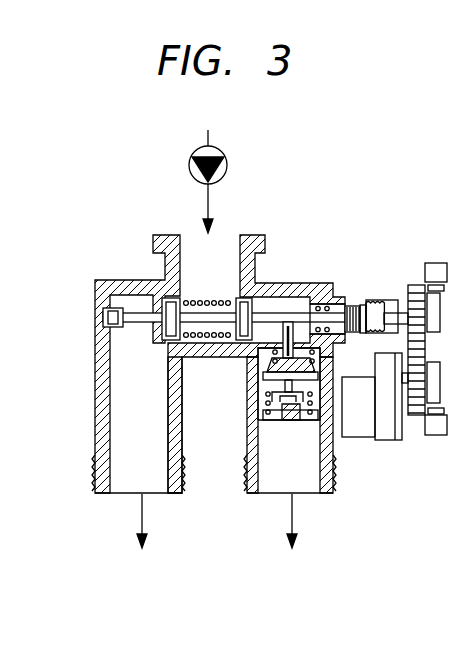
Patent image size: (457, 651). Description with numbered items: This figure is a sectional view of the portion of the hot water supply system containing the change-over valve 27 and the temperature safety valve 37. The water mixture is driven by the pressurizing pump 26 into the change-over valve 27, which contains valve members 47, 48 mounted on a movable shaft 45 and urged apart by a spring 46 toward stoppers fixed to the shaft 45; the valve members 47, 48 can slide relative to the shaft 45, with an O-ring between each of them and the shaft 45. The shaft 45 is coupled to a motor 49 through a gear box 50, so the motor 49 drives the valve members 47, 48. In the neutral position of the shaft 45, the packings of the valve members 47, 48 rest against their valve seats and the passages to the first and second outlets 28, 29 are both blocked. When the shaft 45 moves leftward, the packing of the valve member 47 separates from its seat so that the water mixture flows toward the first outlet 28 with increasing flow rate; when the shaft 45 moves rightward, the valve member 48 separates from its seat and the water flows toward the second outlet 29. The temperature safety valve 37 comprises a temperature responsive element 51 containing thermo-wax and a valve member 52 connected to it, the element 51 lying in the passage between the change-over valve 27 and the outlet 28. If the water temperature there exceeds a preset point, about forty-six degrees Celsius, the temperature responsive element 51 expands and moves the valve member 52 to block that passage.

The pressurizing pump 26 is at (228, 163).
The change-over valve 27 is at (132, 297).
The first outlet 28 is at (296, 480).
The second outlet 29 is at (134, 487).
The temperature safety valve 37 is at (268, 388).
The movable shaft 45 is at (103, 321).
The spring 46 is at (207, 300).
The valve member 47 is at (287, 312).
The valve member 48 is at (163, 298).
The motor 49 is at (357, 436).
The gear box 50 is at (388, 432).
The temperature responsive element 51 is at (318, 302).
The valve member 52 is at (268, 362).